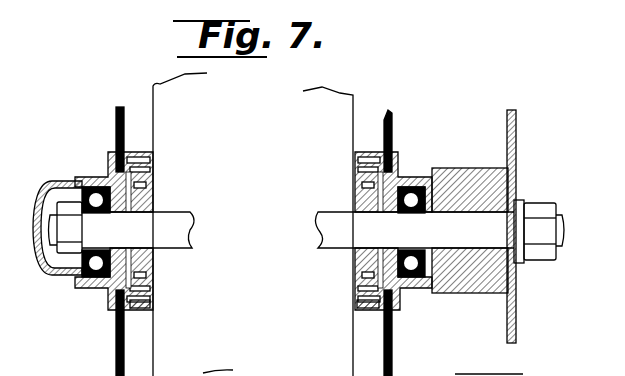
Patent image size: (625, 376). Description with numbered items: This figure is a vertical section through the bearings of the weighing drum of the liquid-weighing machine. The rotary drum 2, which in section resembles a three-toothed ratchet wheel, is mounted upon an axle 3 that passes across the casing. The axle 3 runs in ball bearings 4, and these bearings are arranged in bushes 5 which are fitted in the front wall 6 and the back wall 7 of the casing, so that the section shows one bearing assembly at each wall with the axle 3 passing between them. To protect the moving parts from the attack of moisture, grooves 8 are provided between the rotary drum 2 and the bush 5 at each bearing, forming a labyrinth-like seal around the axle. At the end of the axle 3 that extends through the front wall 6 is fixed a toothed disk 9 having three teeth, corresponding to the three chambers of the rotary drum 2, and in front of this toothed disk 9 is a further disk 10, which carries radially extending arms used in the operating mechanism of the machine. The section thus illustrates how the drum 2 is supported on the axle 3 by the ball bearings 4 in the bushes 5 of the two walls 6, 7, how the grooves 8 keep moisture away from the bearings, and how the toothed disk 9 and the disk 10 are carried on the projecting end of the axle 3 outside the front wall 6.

The rotary drum 2 is at (153, 137).
The axle 3 is at (187, 233).
The ball bearings 4 is at (85, 173).
The bushes 5 is at (92, 290).
The front wall 6 is at (392, 135).
The back wall 7 is at (113, 127).
The grooves 8 is at (153, 302).
The toothed disk 9 is at (493, 192).
The disk 10 is at (516, 150).